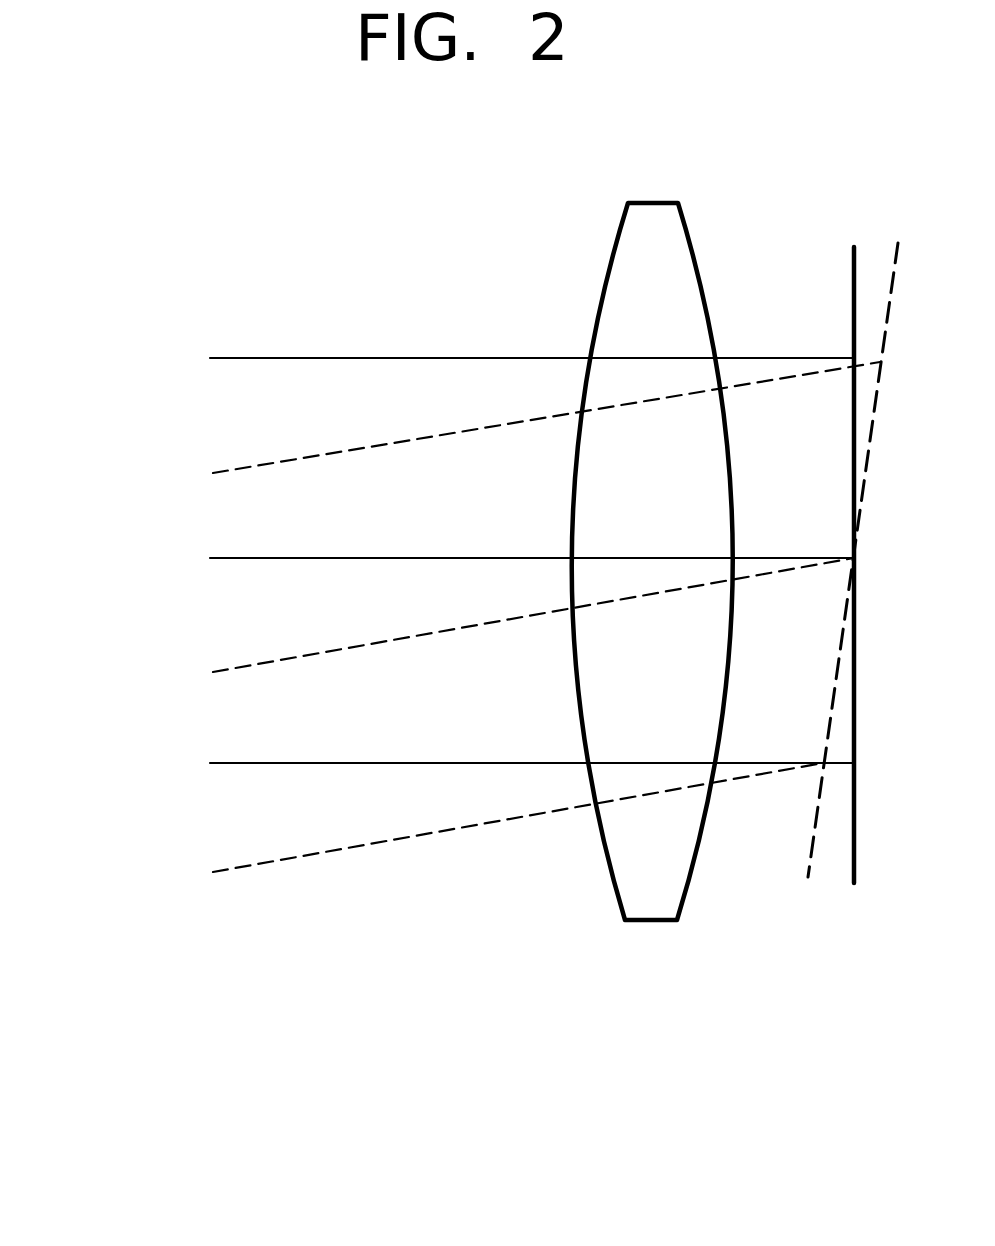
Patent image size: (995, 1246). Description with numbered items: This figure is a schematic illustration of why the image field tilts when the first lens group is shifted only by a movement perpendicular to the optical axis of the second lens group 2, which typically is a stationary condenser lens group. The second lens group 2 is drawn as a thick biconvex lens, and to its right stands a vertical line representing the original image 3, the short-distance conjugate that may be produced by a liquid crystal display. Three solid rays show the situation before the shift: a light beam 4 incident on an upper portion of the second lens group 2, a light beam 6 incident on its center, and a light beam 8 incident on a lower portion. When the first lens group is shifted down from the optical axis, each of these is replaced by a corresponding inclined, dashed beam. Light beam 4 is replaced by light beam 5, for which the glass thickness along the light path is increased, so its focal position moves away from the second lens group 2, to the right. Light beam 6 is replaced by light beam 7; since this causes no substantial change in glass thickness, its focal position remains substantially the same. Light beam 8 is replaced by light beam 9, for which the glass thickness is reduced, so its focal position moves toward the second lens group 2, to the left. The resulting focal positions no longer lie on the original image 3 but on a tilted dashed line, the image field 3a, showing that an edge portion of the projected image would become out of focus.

The second lens group 2 is at (648, 923).
The original image 3 is at (853, 883).
The image field 3a is at (808, 880).
The light beam 4 is at (213, 357).
The light beam 5 is at (213, 472).
The light beam 6 is at (213, 556).
The light beam 7 is at (213, 672).
The light beam 8 is at (213, 760).
The light beam 9 is at (213, 870).